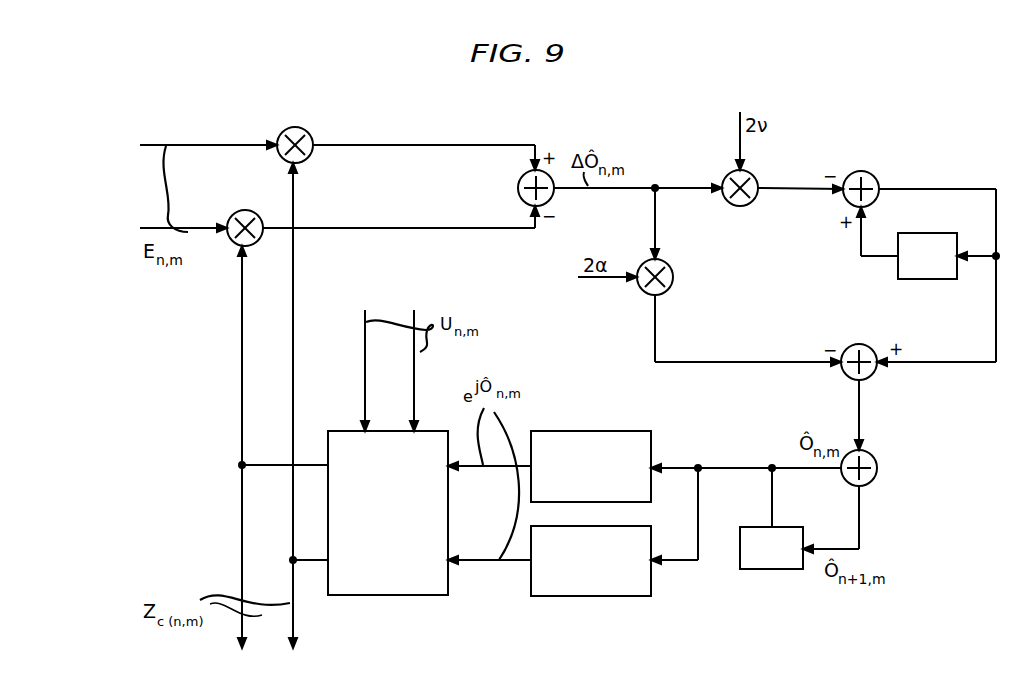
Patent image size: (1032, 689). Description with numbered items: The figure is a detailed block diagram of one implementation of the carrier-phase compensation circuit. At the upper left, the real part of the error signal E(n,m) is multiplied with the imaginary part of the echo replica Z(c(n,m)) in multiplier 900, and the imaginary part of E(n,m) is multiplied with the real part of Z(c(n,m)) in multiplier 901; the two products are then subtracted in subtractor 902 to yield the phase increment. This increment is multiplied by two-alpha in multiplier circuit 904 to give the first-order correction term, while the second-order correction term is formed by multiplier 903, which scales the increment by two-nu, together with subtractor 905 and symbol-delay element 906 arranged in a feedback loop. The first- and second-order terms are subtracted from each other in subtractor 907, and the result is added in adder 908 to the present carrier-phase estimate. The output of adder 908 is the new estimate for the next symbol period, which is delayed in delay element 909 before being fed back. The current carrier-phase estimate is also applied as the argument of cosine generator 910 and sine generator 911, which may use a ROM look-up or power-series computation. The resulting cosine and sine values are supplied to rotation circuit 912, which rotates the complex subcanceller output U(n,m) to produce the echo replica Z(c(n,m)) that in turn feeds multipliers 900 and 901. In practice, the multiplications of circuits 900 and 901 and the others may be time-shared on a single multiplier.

The multiplier 900 is at (306, 130).
The multiplier 901 is at (240, 210).
The subtractor 902 is at (517, 190).
The multiplier 903 is at (729, 174).
The multiplier circuit 904 is at (667, 291).
The subtractor 905 is at (872, 177).
The symbol-delay element 906 is at (934, 233).
The subtractor 907 is at (866, 346).
The adder 908 is at (878, 470).
The delay element 909 is at (778, 570).
The cosine generator circuit 910 is at (596, 431).
The sine generator circuit 911 is at (592, 597).
The rotation circuit 912 is at (386, 596).